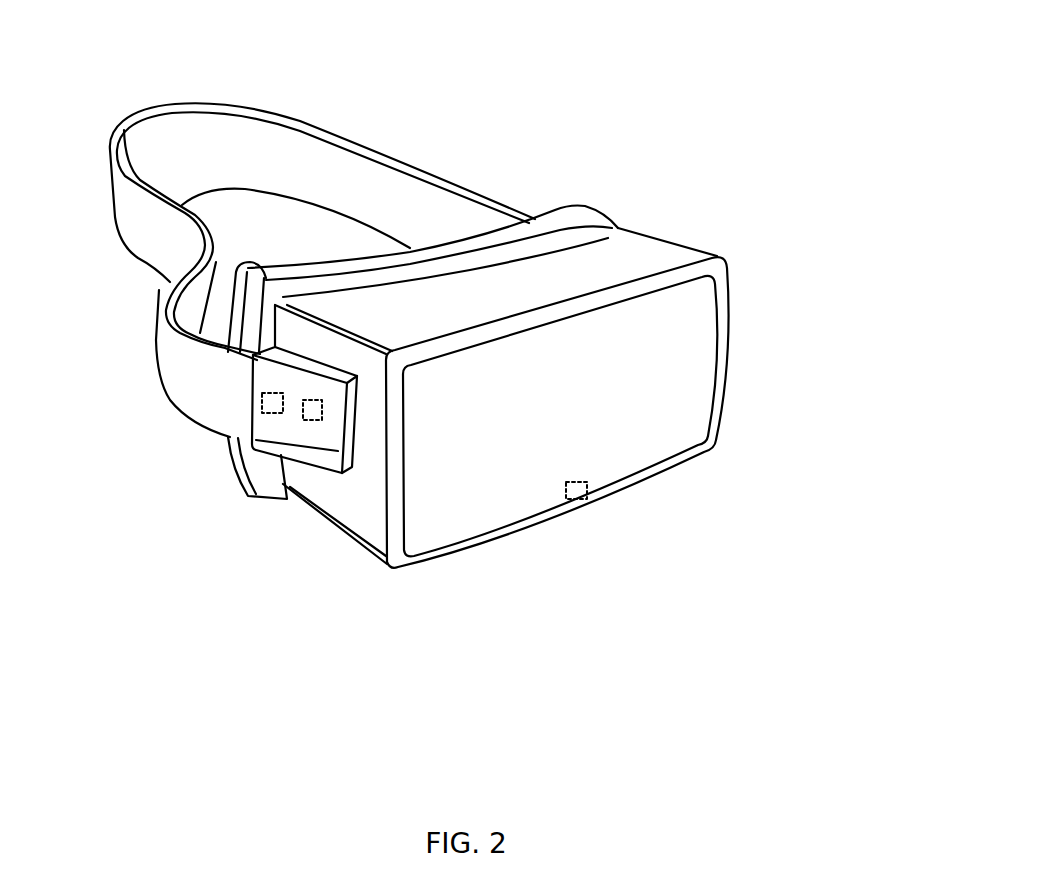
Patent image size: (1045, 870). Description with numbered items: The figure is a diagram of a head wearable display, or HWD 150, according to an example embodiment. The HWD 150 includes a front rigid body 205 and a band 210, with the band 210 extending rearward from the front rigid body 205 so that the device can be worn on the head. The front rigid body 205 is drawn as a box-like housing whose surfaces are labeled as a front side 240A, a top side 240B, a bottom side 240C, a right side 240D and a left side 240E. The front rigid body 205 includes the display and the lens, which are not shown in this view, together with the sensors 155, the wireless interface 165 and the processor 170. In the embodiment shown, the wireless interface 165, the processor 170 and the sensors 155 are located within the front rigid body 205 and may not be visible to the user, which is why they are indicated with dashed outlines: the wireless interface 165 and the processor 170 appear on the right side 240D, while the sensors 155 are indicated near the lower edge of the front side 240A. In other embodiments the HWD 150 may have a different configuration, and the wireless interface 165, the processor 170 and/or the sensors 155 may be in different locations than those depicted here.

The HWD 150 is at (37, 49).
The band 210 is at (425, 170).
The front rigid body 205 is at (473, 406).
The front side 240A is at (641, 434).
The top side 240B is at (357, 305).
The bottom side 240C is at (315, 537).
The right side 240D is at (357, 498).
The left side 240E is at (695, 242).
The wireless interface 165 is at (257, 401).
The processor 170 is at (297, 428).
The sensors 155 is at (580, 496).